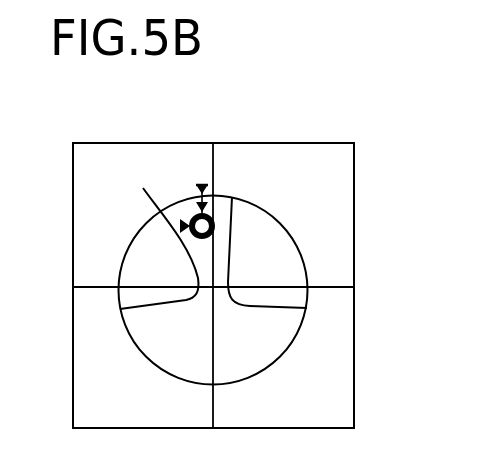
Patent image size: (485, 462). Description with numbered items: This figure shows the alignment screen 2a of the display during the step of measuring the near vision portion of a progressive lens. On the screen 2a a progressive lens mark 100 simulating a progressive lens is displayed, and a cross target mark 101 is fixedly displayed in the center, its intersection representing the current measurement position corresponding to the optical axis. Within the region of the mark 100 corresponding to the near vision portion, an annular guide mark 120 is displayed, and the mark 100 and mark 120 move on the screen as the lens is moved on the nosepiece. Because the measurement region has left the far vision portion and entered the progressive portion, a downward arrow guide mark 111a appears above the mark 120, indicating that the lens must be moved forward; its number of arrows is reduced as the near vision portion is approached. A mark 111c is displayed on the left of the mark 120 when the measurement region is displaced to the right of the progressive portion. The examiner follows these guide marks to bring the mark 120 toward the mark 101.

The alignment screen 2a is at (120, 143).
The progressive lens mark 100 is at (292, 233).
The cross target mark 101 is at (235, 288).
The annular guide mark for near vision portion 120 is at (191, 236).
The downward arrow guide mark 111a is at (222, 192).
The rightward arrow guide mark 111c is at (170, 221).